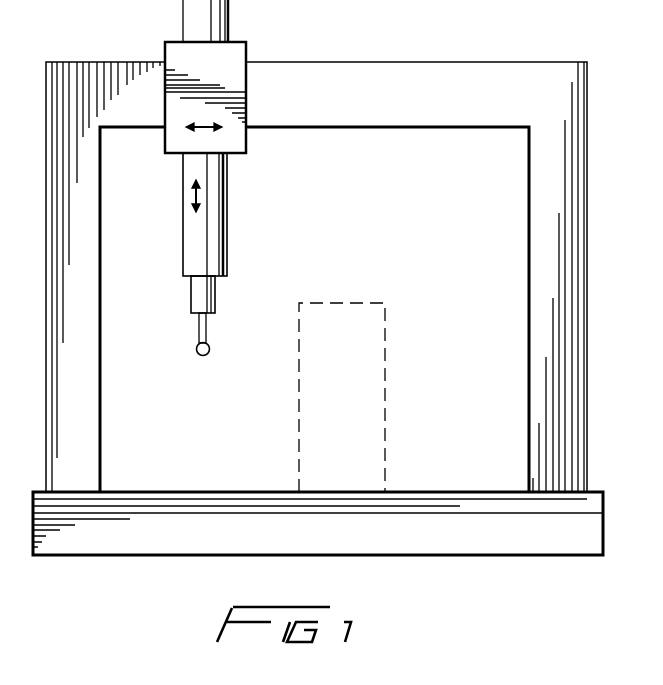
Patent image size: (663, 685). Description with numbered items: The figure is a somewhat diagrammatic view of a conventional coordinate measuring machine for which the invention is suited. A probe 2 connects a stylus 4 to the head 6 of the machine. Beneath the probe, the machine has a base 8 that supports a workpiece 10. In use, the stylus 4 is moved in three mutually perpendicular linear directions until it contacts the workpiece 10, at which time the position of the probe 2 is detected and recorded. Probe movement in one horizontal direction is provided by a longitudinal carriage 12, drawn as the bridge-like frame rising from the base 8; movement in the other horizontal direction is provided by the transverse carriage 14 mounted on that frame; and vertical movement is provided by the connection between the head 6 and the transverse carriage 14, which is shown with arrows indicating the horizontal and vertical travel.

The probe 2 is at (198, 300).
The stylus 4 is at (196, 347).
The head 6 is at (193, 248).
The base 8 is at (240, 492).
The workpiece 10 is at (305, 396).
The longitudinal carriage 12 is at (537, 245).
The transverse carriage 14 is at (235, 60).